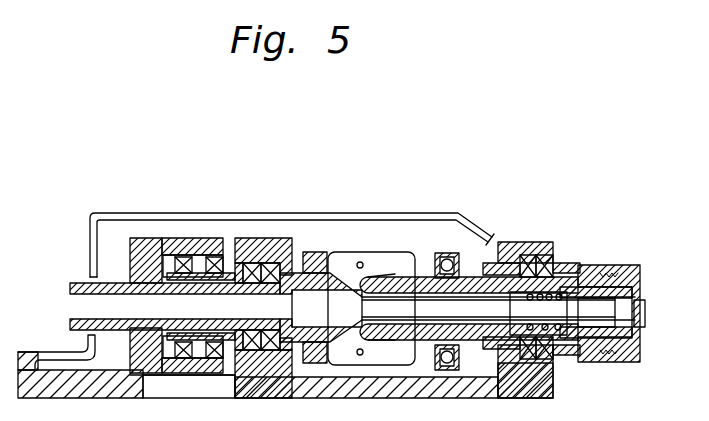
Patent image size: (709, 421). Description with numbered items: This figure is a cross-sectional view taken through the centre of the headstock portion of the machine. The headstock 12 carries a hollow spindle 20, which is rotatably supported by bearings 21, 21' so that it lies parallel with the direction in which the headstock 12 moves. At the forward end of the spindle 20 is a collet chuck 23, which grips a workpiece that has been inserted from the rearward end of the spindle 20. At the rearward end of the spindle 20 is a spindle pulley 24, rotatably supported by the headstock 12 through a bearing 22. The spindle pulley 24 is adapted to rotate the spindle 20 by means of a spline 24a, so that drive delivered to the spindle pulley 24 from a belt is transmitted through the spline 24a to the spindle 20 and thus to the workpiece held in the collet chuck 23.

The headstock 12 is at (505, 242).
The hollow spindle 20 is at (592, 270).
The bearing 21 is at (536, 286).
The bearing 21' is at (263, 289).
The bearing 22 is at (183, 240).
The collet chuck 23 is at (644, 322).
The spindle pulley 24 is at (147, 242).
The spline 24a is at (140, 276).